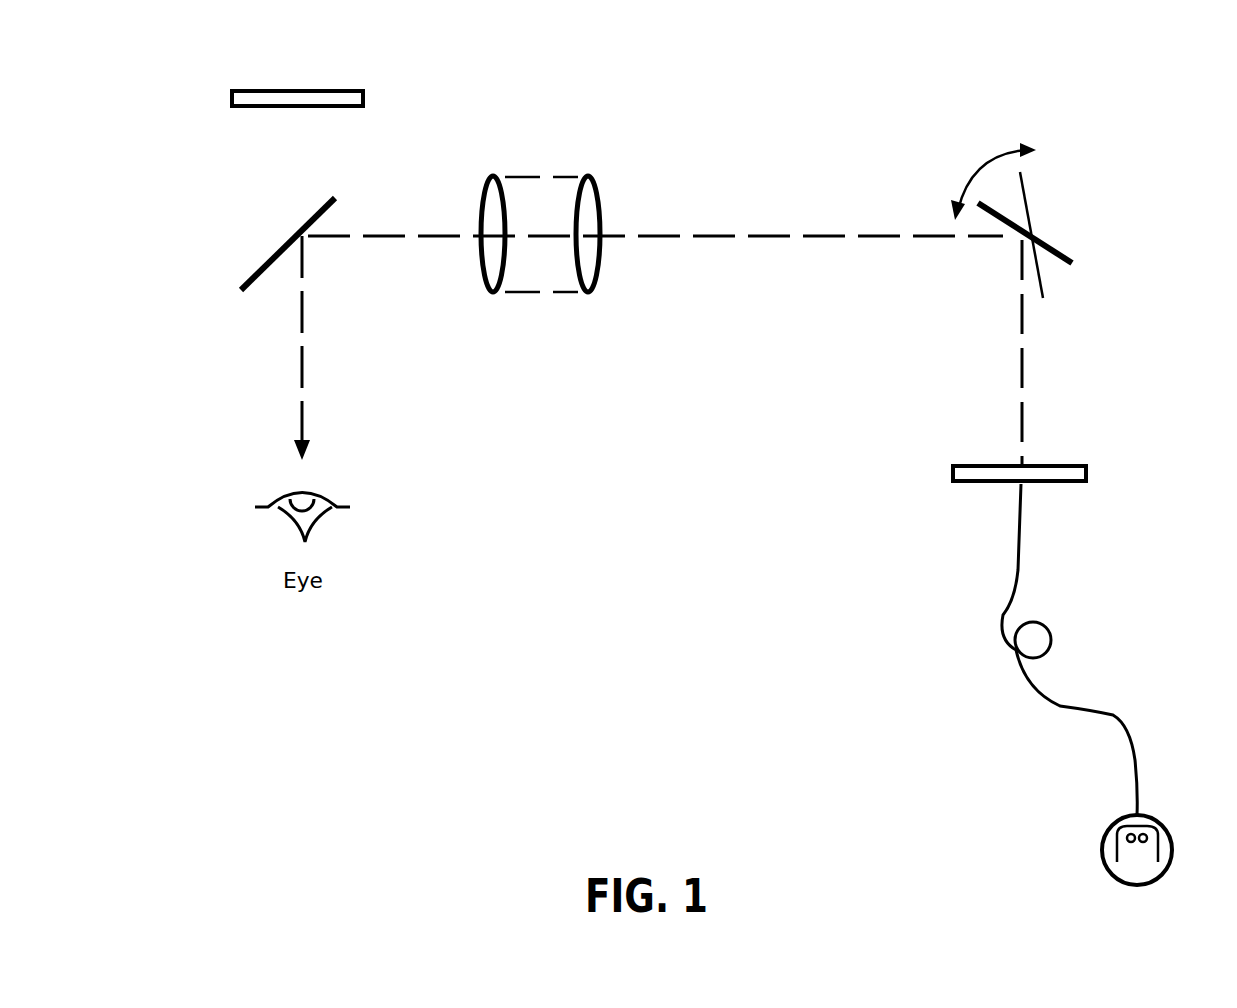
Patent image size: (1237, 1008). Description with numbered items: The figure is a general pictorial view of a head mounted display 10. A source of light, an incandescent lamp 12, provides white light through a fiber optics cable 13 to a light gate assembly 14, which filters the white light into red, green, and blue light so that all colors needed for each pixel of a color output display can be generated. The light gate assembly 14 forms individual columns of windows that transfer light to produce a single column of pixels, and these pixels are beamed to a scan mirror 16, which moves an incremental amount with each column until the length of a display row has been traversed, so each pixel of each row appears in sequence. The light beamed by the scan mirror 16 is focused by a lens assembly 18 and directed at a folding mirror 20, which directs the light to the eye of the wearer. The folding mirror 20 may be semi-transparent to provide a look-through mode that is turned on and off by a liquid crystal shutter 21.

The head mounted display 10 is at (657, 444).
The incandescent lamp 12 is at (1173, 828).
The fiber optics cable 13 is at (1108, 701).
The light gate assembly 14 is at (1058, 455).
The scan mirror 16 is at (1036, 206).
The lens assembly 18 is at (608, 202).
The folding mirror 20 is at (303, 209).
The liquid crystal shutter 21 is at (318, 73).